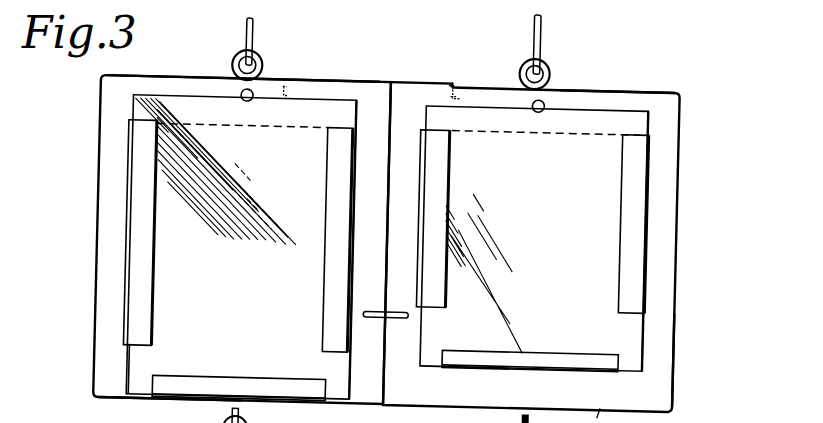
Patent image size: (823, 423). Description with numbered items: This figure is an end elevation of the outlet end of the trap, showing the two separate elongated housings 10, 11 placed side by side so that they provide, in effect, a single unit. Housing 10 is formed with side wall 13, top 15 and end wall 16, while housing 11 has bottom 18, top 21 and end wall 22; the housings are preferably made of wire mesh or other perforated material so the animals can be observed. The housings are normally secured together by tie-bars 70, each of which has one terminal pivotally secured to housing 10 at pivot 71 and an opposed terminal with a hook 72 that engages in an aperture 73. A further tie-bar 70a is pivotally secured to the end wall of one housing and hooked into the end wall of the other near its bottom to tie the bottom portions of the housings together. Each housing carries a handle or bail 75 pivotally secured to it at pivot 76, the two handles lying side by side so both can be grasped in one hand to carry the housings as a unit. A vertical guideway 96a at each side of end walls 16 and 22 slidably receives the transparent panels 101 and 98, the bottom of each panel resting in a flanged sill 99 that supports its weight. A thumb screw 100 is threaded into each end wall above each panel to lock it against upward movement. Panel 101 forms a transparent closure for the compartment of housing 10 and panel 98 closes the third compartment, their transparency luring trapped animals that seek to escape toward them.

The housing 10 is at (397, 233).
The housing 11 is at (99, 303).
The side wall 13 is at (679, 313).
The top 15 is at (658, 74).
The end wall 16 is at (664, 346).
The bottom 18 is at (131, 396).
The top 21 is at (177, 71).
The end wall 22 is at (113, 337).
The tie-bar 70 is at (363, 72).
The tie-bar 70a is at (401, 303).
The pivotal connection 71 is at (462, 74).
The hook 72 is at (293, 83).
The aperture 73 is at (285, 72).
The handle 75 is at (249, 36).
The pivotal connection 76 is at (262, 66).
The vertical guideway 96a is at (146, 254).
The transparent panel 98 is at (149, 359).
The flanged sill 99 is at (258, 381).
The thumb screw 100 is at (538, 99).
The transparent panel 101 is at (591, 218).